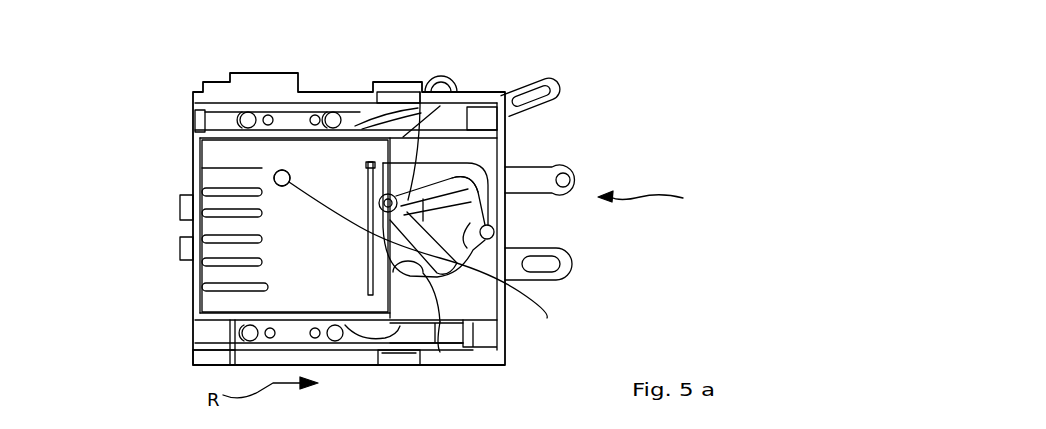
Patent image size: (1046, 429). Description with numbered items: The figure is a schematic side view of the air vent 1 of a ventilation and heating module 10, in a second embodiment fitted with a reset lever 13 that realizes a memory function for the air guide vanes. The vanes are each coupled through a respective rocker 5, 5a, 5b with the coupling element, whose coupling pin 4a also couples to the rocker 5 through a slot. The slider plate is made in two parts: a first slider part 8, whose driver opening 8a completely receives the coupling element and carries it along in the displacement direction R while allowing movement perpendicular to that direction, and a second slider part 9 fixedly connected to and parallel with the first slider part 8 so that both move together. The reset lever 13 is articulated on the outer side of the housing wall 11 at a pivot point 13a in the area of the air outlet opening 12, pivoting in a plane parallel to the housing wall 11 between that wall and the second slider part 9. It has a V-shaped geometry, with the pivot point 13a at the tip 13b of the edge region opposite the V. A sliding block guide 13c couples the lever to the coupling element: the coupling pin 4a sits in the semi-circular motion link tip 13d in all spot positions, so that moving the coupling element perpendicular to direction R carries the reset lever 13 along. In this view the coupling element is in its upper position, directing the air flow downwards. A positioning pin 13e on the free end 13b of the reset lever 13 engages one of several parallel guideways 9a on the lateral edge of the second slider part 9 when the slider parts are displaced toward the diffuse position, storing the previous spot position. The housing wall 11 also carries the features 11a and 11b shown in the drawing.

The air vent 1 is at (353, 75).
The coupling pin 4a is at (425, 82).
The rocker 5 is at (568, 164).
The rocker 5a is at (573, 258).
The rocker 5b is at (557, 85).
The first slider part 8 is at (422, 332).
The driver opening 8a is at (378, 332).
The second slider part 9 is at (318, 284).
The guideways 9a is at (220, 275).
The ventilation and heating module 10 is at (185, 72).
The housing wall 11 is at (481, 307).
The spring arm 11a is at (440, 332).
The spring 11b is at (437, 259).
The air outlet opening 12 is at (654, 195).
The reset lever 13 is at (358, 203).
The pivot point 13a is at (494, 230).
The tip 13b is at (275, 172).
The sliding block guide 13c is at (389, 194).
The motion link tip 13d is at (452, 185).
The positioning pin 13e is at (282, 170).